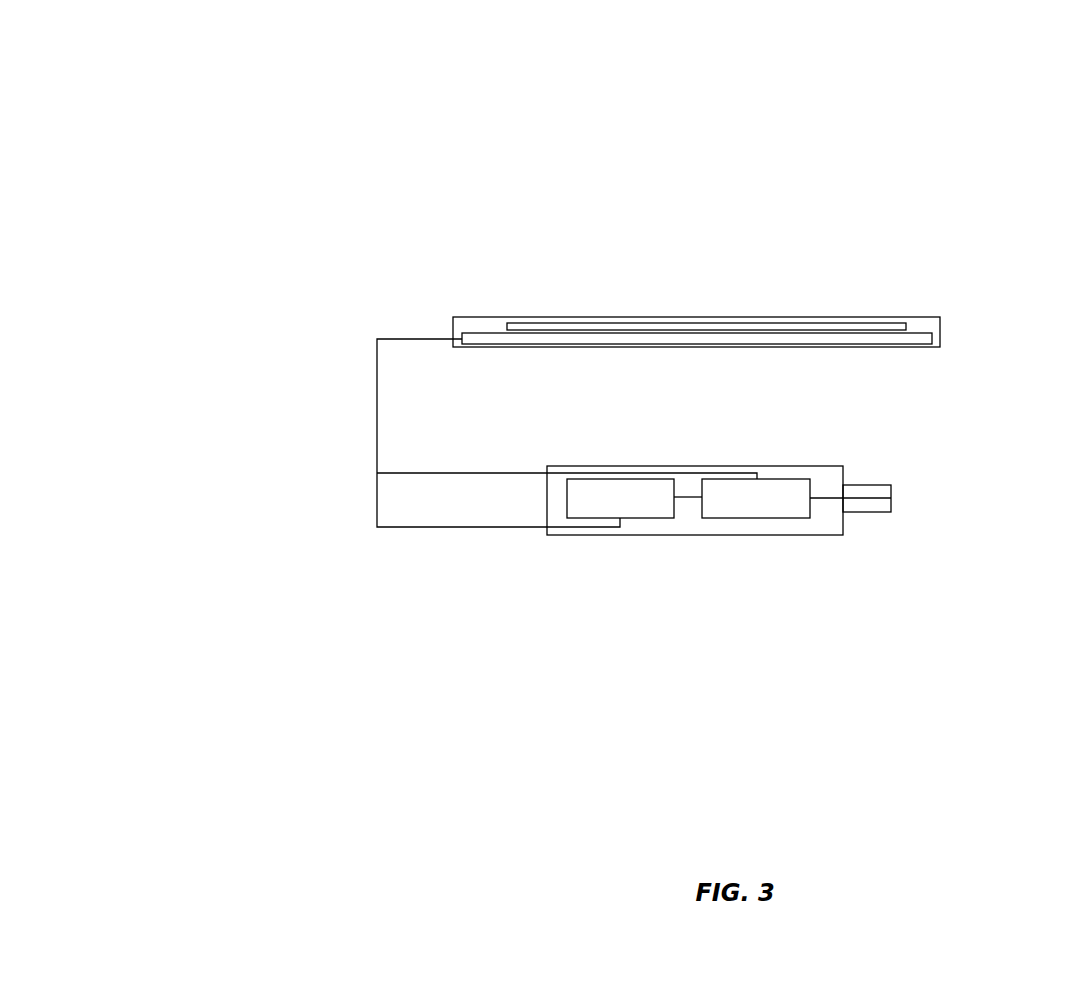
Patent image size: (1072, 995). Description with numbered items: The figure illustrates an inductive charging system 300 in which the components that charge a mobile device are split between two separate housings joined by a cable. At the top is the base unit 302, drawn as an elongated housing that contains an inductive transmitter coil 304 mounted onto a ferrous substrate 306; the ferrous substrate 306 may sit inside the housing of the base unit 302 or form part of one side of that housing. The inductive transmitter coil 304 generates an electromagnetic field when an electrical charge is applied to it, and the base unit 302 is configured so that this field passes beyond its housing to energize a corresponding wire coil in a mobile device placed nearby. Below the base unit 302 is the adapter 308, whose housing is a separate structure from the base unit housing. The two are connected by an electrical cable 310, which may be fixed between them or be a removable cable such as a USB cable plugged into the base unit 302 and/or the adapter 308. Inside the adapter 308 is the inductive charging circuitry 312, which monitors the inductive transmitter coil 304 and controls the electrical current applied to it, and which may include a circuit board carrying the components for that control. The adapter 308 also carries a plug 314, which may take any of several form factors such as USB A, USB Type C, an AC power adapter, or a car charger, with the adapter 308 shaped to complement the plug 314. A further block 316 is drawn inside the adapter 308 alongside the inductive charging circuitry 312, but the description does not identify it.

The inductive charging system 300 is at (262, 120).
The base unit 302 is at (910, 318).
The inductive transmitter coil 304 is at (907, 328).
The ferrous substrate 306 is at (933, 342).
The adapter 308 is at (695, 535).
The electrical cable 310 is at (377, 443).
The inductive charging circuitry 312 is at (603, 511).
The plug 314 is at (892, 507).
The communications circuitry 316 is at (739, 511).